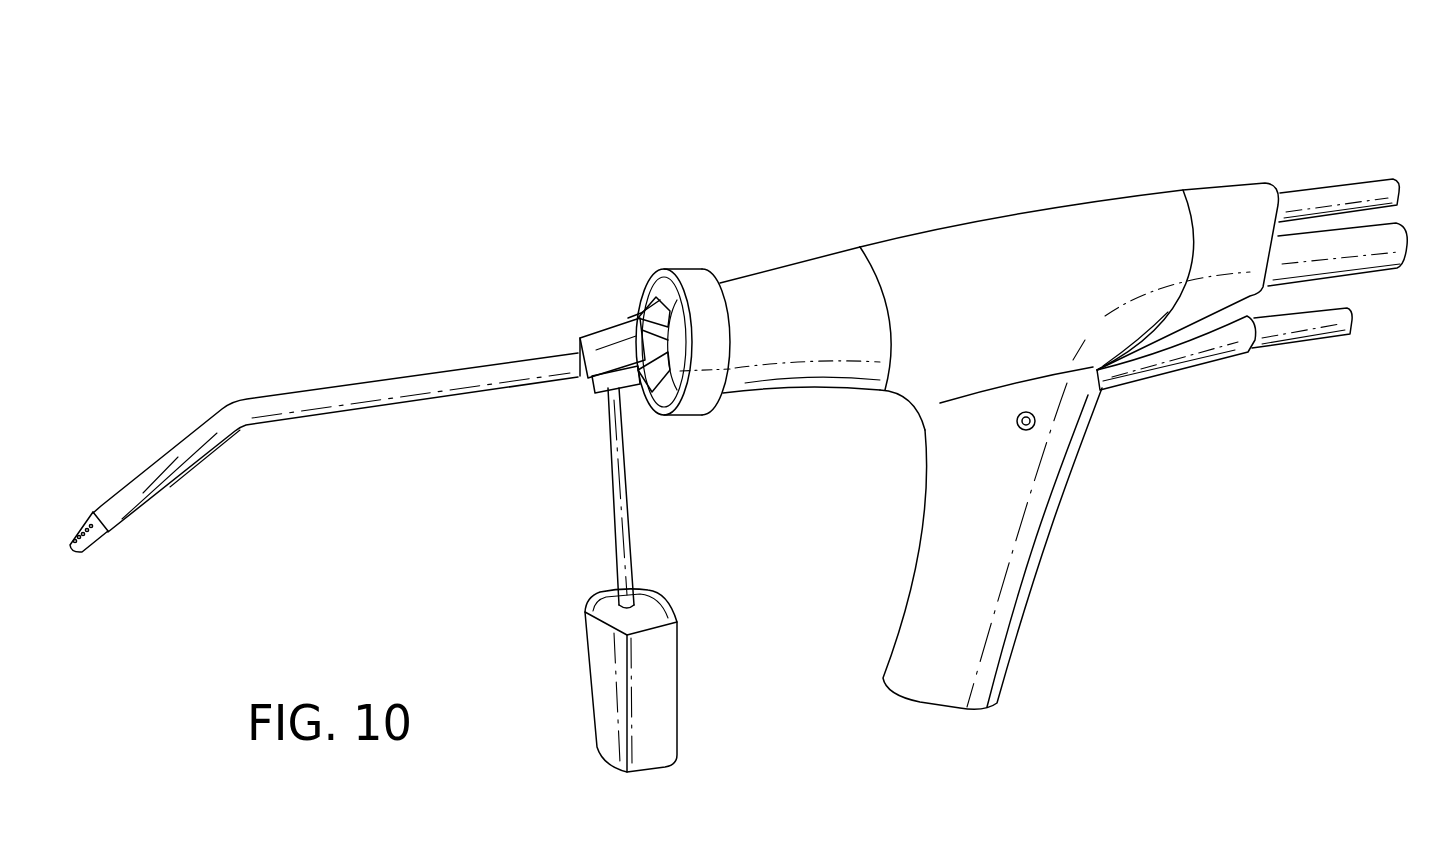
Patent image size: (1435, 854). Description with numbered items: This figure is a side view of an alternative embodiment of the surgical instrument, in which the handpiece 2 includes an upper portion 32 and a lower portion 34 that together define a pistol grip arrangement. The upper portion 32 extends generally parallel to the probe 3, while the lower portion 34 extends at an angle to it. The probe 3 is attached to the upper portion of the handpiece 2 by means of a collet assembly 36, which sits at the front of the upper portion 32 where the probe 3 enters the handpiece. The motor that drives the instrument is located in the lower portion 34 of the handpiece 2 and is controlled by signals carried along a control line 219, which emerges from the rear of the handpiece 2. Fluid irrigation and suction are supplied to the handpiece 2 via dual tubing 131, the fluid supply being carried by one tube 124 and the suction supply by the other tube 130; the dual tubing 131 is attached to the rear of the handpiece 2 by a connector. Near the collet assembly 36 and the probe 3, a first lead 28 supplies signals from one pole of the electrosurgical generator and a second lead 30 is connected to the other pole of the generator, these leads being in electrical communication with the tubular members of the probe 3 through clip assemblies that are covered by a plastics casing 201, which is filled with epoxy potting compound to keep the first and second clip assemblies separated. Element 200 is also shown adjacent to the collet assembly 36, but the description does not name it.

The handpiece 2 is at (1070, 216).
The probe 3 is at (335, 390).
The first lead 28 is at (612, 529).
The second lead 30 is at (635, 512).
The upper portion 32 is at (903, 241).
The lower portion 34 is at (1030, 583).
The collet assembly 36 is at (768, 286).
The tube 124 is at (1303, 188).
The tube 130 is at (1363, 277).
The dual tubing 131 is at (1368, 139).
The collet jaws 200 is at (647, 322).
The plastics casing 201 is at (601, 334).
The control line 219 is at (1300, 354).